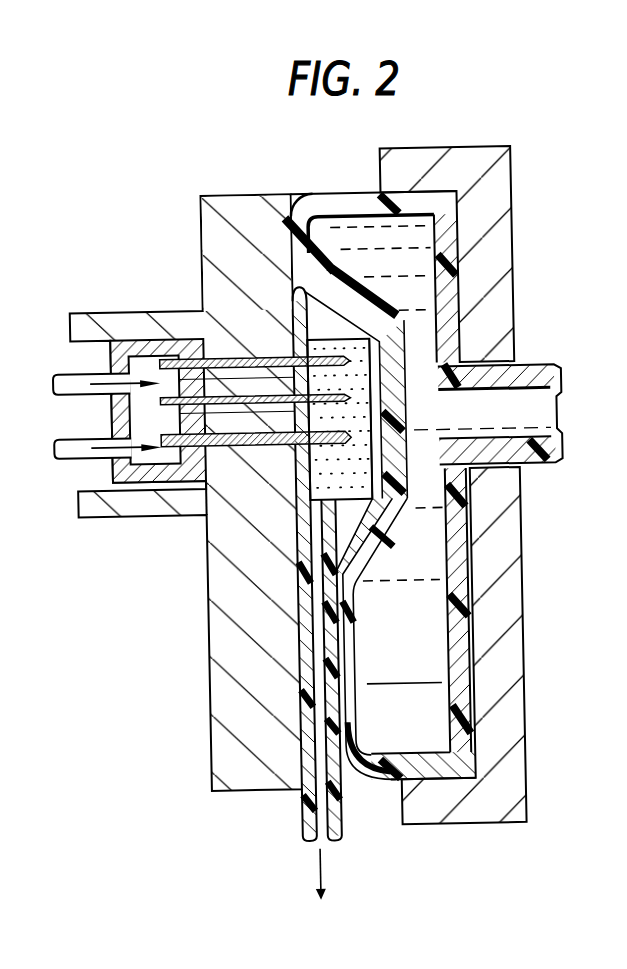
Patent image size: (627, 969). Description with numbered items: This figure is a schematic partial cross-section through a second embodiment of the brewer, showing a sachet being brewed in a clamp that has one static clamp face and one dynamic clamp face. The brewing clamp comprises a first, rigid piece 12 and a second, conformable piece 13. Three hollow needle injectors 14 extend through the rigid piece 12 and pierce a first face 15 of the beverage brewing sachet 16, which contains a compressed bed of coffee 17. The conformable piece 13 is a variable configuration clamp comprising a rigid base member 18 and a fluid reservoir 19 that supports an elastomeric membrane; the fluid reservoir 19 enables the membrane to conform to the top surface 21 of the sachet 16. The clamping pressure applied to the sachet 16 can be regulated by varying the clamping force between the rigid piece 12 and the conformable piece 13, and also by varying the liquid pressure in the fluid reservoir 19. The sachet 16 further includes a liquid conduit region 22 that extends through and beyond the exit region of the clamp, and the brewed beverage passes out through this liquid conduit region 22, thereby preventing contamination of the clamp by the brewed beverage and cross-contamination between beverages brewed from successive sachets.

The rigid piece 12 is at (262, 211).
The conformable piece 13 is at (527, 171).
The hollow needle injectors 14 is at (222, 347).
The first face 15 is at (297, 461).
The beverage brewing sachet 16 is at (331, 339).
The compressed bed of coffee 17 is at (350, 514).
The rigid base member 18 is at (486, 663).
The fluid reservoir 19 is at (436, 697).
The top surface 21 is at (457, 229).
The liquid conduit region 22 is at (303, 724).